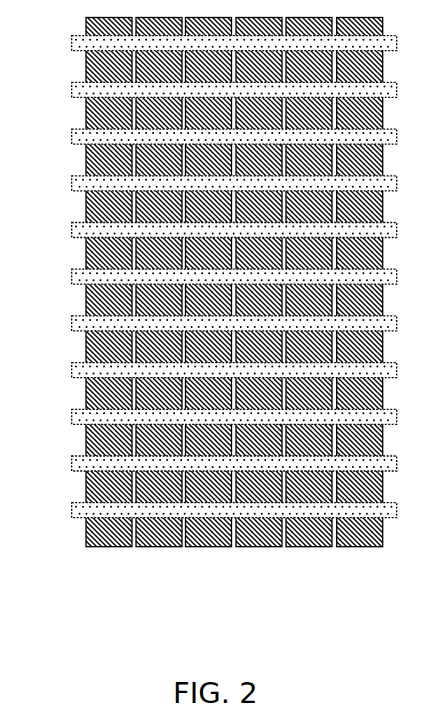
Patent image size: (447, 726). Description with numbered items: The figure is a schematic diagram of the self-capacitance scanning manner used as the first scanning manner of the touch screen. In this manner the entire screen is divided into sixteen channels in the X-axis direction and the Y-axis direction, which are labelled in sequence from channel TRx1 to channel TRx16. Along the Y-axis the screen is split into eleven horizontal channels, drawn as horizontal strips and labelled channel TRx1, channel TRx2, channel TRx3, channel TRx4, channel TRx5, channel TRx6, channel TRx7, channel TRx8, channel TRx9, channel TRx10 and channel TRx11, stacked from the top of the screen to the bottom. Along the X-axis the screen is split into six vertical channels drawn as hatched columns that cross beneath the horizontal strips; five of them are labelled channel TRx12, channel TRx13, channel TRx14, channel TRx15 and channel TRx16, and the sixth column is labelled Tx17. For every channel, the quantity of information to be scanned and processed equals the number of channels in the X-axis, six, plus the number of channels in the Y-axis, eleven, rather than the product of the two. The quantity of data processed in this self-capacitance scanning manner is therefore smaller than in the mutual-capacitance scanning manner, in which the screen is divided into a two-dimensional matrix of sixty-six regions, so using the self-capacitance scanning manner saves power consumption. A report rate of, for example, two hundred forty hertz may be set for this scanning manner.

The channel TRx1 is at (209, 46).
The channel TRx2 is at (209, 92).
The channel TRx3 is at (209, 139).
The channel TRx4 is at (209, 186).
The channel TRx5 is at (209, 233).
The channel TRx6 is at (209, 279).
The channel TRx7 is at (209, 326).
The channel TRx8 is at (209, 373).
The channel TRx9 is at (209, 419).
The channel TRx10 is at (209, 466).
The channel TRx11 is at (209, 513).
The channel TRx12 is at (114, 322).
The channel TRx13 is at (166, 304).
The channel TRx14 is at (216, 322).
The channel TRx15 is at (269, 304).
The channel TRx16 is at (322, 320).
The transmit electrode column Tx17 is at (365, 305).